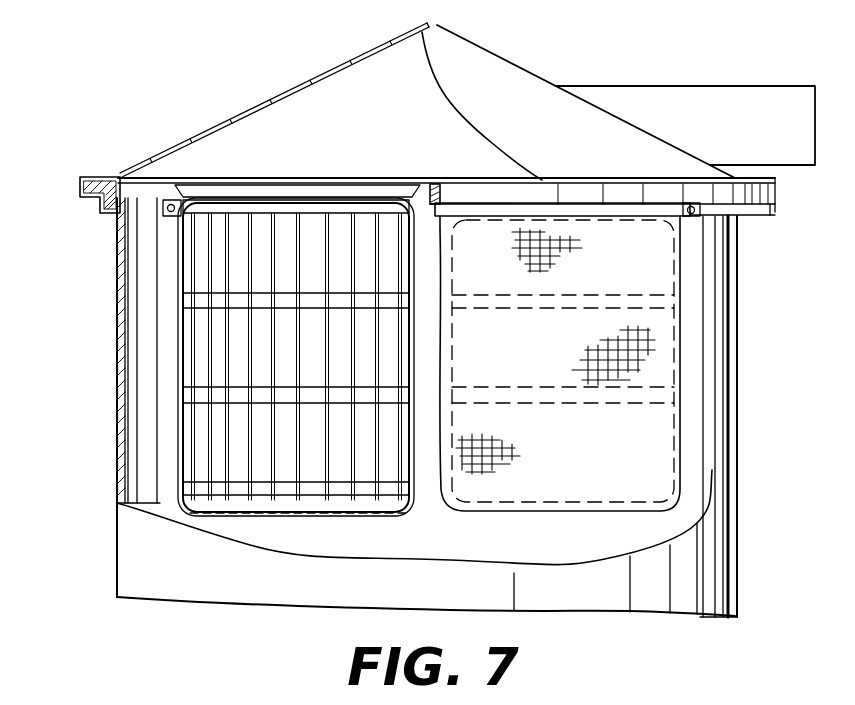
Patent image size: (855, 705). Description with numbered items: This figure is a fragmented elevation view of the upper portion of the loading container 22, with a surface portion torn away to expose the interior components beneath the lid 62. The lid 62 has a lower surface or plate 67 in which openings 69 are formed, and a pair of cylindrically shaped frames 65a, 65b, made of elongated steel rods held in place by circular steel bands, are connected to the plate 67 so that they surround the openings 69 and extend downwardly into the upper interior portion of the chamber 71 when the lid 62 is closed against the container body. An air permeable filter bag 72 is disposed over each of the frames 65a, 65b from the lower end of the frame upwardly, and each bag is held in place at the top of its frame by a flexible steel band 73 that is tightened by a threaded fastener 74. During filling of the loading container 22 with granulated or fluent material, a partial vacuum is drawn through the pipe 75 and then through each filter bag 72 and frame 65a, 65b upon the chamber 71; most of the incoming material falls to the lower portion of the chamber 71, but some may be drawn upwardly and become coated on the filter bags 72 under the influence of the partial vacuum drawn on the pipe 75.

The loading container 22 is at (105, 367).
The lid 62 is at (505, 68).
The cylindrically shaped frame 65a is at (310, 232).
The cylindrically shaped frame 65b is at (672, 452).
The lower surface or plate 67 is at (170, 185).
The openings 69 is at (215, 192).
The chamber 71 is at (163, 463).
The air permeable filter bag 72 is at (682, 312).
The flexible steel band 73 is at (430, 193).
The threaded fastener 74 is at (166, 212).
The pipe 75 is at (687, 92).